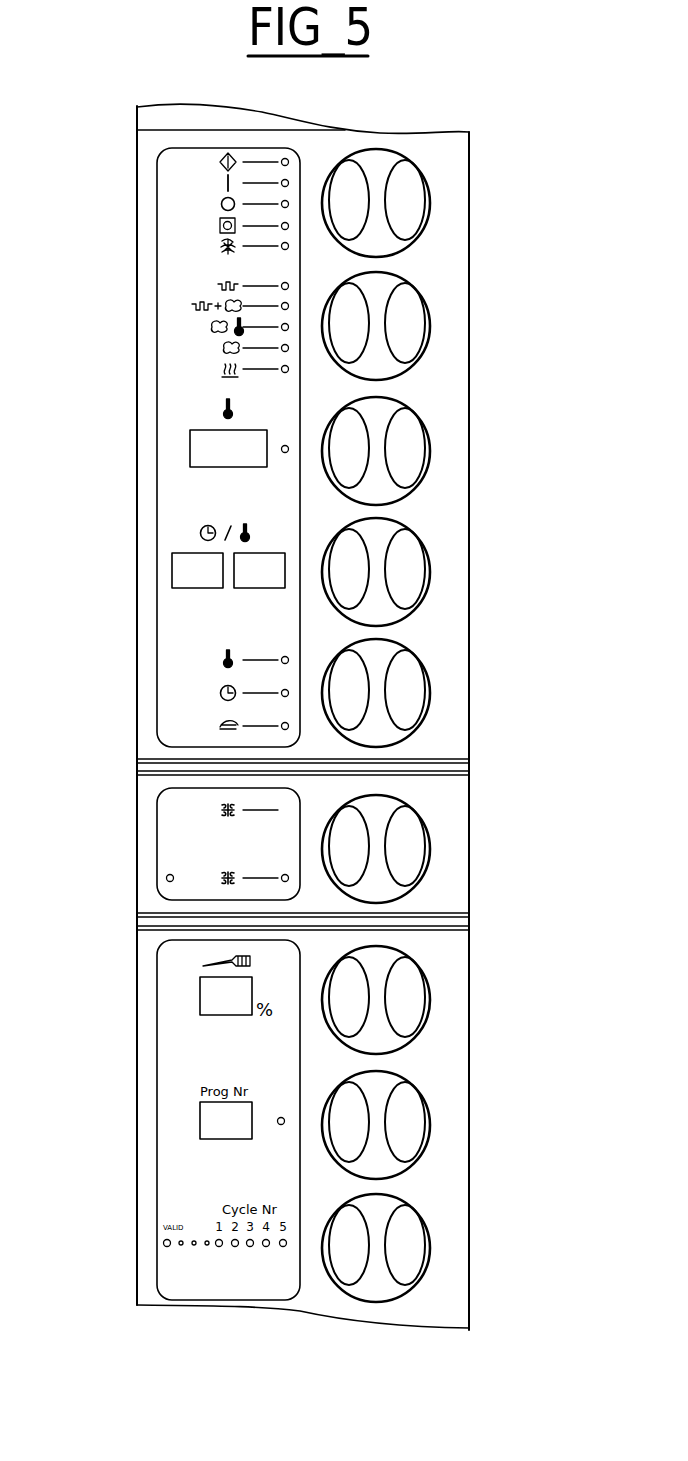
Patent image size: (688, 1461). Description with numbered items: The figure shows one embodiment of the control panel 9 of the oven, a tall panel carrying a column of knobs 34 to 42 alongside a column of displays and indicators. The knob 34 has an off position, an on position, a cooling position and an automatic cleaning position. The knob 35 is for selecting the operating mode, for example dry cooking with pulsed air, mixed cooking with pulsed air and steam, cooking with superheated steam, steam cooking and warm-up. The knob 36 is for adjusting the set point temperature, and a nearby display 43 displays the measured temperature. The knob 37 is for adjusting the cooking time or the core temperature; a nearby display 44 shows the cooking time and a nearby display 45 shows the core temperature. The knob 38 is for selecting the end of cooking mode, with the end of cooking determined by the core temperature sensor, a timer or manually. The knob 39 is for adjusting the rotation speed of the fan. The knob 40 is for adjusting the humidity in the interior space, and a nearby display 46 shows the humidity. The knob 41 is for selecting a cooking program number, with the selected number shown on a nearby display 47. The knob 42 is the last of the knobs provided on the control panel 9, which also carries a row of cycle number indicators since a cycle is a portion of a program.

The control panel 9 is at (478, 178).
The knob 34 is at (408, 154).
The knob 35 is at (428, 330).
The knob 36 is at (428, 443).
The knob 37 is at (428, 570).
The knob 38 is at (428, 693).
The knob 39 is at (428, 843).
The knob 40 is at (428, 990).
The knob 41 is at (428, 1103).
The knob 42 is at (428, 1215).
The display 43 is at (190, 449).
The display 44 is at (172, 575).
The display 45 is at (245, 589).
The display 46 is at (200, 996).
The display 47 is at (200, 1120).